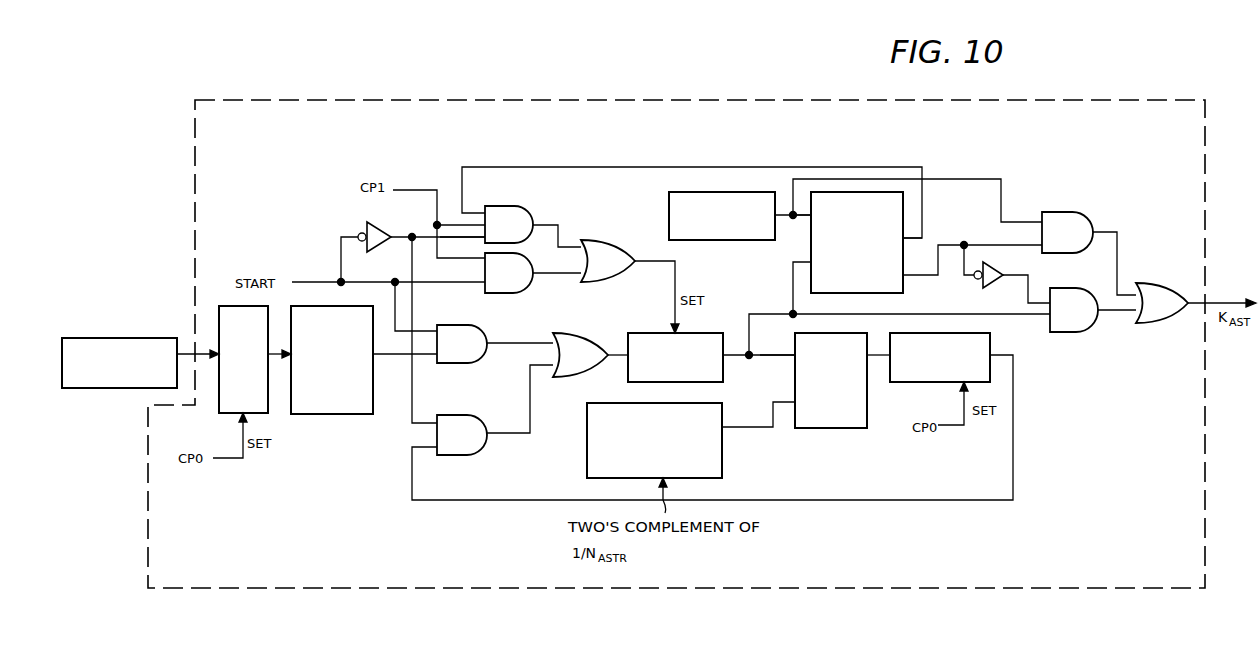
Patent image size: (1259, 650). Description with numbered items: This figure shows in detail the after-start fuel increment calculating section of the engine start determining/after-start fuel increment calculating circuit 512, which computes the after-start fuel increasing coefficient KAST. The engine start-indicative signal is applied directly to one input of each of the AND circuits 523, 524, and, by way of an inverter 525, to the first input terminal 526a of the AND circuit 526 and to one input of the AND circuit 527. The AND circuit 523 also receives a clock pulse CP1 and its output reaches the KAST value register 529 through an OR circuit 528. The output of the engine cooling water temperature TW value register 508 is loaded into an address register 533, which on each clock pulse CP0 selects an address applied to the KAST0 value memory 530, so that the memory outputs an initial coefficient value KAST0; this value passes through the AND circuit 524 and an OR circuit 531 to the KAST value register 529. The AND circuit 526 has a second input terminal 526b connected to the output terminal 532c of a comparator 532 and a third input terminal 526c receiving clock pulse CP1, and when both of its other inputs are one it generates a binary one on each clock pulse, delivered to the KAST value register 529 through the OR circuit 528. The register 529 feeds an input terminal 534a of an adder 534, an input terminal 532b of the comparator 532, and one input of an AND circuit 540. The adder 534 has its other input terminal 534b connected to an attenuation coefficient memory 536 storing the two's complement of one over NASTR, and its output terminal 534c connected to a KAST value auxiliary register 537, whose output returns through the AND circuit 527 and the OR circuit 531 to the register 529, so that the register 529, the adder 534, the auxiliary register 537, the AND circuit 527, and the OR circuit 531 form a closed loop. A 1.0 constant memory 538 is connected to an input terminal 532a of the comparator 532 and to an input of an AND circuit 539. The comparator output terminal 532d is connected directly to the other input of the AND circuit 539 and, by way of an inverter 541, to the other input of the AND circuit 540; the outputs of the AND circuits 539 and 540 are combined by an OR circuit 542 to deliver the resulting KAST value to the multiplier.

The engine cooling water temperature TW value register 508 is at (112, 338).
The address register 533 is at (270, 398).
The KAST0 value memory 530 is at (345, 414).
The inverter 525 is at (377, 222).
The AND circuit 526 is at (535, 213).
The first input terminal 526a is at (483, 256).
The second input terminal 526b is at (483, 213).
The third input terminal 526c is at (490, 225).
The AND circuit 523 is at (512, 293).
The OR circuit 528 is at (599, 240).
The AND circuit 524 is at (447, 365).
The AND circuit 527 is at (470, 415).
The OR circuit 531 is at (580, 333).
The KAST value register 529 is at (717, 333).
The 1.0 constant memory 538 is at (713, 192).
The comparator 532 is at (873, 192).
The input terminal 532a is at (810, 213).
The input terminal 532b is at (810, 262).
The output terminal 532c is at (907, 237).
The output terminal 532d is at (905, 275).
The adder 534 is at (833, 428).
The input terminal 534a is at (793, 358).
The input terminal 534b is at (793, 400).
The output terminal 534c is at (868, 358).
The attenuation coefficient memory 536 is at (725, 443).
The KAST value auxiliary register 537 is at (995, 337).
The AND circuit 539 is at (1070, 212).
The AND circuit 540 is at (1085, 332).
The inverter 541 is at (985, 288).
The OR circuit 542 is at (1160, 323).
The engine start determining/after-start fuel increment calculating circuit 512 is at (1205, 405).